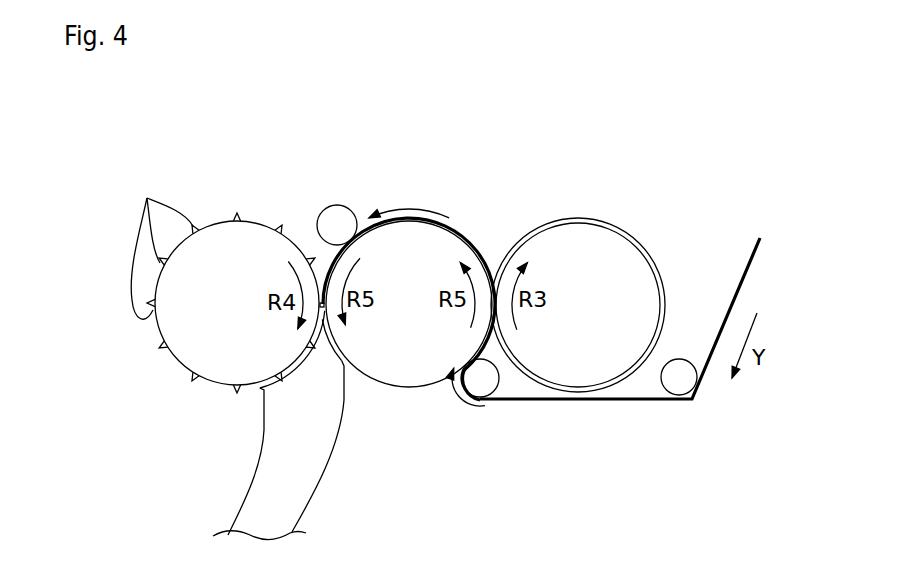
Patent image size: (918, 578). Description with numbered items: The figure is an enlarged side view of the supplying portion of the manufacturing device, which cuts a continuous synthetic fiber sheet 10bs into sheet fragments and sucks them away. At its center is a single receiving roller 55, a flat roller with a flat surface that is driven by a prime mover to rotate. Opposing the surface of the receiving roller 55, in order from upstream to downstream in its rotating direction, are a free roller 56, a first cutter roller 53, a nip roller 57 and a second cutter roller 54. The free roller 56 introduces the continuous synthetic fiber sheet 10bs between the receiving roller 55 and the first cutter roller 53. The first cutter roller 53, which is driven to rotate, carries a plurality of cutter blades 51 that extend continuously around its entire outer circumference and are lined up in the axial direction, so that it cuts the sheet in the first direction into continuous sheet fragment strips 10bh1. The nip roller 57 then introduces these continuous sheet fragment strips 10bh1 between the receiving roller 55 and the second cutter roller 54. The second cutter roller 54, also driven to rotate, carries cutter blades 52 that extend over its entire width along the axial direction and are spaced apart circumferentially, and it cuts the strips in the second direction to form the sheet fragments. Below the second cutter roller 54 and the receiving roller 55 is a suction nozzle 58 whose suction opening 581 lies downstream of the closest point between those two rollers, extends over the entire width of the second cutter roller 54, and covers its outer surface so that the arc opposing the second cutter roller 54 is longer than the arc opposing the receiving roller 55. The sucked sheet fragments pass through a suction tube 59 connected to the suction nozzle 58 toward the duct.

The second cutter roller 54 is at (223, 257).
The cutter blades 52 is at (147, 198).
The nip roller 57 is at (337, 224).
The receiving roller 55 is at (432, 253).
The continuous sheet fragment strips 10bh1 is at (475, 250).
The continuous synthetic fiber sheet 10bs is at (732, 295).
The cutter blades 51 is at (568, 220).
The first cutter roller 53 is at (615, 260).
The free roller 56 is at (487, 382).
The suction nozzle 58 is at (279, 408).
The suction opening 581 is at (314, 352).
The suction tube 59 is at (292, 494).